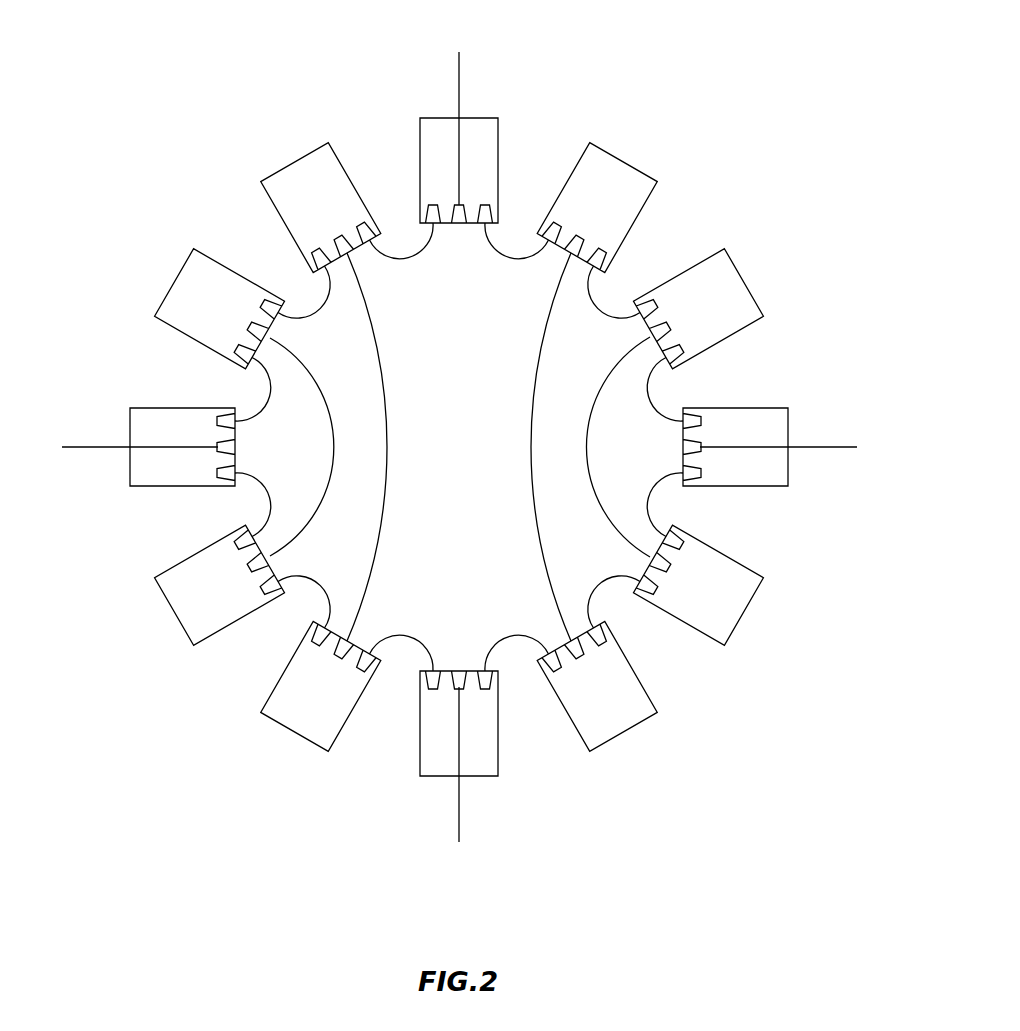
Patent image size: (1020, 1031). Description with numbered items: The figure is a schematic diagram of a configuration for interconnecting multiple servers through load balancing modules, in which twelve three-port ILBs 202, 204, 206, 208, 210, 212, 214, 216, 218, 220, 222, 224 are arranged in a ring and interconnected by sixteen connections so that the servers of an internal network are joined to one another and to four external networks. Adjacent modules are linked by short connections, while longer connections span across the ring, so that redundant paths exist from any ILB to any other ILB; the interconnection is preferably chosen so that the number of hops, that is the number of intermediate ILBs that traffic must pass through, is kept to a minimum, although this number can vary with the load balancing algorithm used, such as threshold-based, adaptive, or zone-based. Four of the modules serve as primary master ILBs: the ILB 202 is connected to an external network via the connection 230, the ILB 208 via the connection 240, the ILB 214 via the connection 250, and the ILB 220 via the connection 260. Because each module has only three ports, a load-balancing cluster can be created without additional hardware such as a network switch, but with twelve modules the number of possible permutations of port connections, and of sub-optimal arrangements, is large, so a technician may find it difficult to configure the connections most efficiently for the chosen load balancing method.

The ILB 202 is at (490, 117).
The ILB 204 is at (635, 165).
The ILB 206 is at (758, 293).
The ILB 208 is at (772, 484).
The ILB 210 is at (750, 601).
The ILB 212 is at (638, 724).
The ILB 214 is at (435, 774).
The ILB 216 is at (300, 735).
The ILB 218 is at (173, 613).
The ILB 220 is at (130, 422).
The ILB 222 is at (172, 288).
The ILB 224 is at (283, 168).
The connection 230 is at (459, 52).
The connection 240 is at (857, 447).
The connection 250 is at (459, 842).
The connection 260 is at (62, 447).